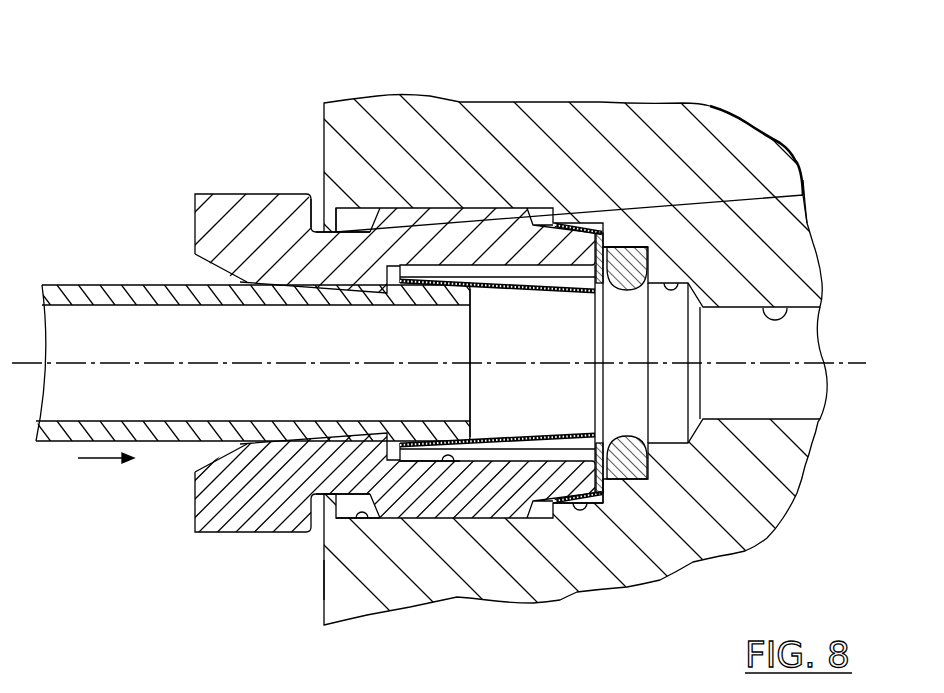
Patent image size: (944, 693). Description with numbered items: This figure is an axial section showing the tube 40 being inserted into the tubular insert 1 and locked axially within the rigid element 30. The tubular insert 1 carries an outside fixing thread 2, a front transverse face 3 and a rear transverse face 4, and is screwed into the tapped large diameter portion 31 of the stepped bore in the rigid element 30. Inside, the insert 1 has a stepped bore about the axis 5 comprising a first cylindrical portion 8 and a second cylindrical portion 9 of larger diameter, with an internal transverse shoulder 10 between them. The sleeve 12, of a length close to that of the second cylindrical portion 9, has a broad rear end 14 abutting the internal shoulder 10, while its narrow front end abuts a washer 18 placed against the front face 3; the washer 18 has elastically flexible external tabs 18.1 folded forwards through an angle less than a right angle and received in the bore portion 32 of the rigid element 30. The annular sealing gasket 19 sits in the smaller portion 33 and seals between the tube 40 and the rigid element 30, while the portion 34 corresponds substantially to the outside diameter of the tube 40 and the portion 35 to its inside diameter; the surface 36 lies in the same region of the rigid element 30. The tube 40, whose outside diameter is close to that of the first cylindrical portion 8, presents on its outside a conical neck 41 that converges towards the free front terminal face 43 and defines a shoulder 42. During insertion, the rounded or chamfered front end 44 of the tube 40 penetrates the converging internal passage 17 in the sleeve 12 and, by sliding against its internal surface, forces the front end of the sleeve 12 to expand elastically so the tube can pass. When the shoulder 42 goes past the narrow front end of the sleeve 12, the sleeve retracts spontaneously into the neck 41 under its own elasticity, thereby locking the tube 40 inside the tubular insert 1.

The tubular insert 1 is at (247, 172).
The outside fixing thread 2 is at (437, 205).
The front transverse face 3 is at (610, 487).
The rear transverse face 4 is at (198, 505).
The axis 5 is at (848, 362).
The first cylindrical portion 8 is at (278, 440).
The second cylindrical portion 9 is at (448, 462).
The internal transverse shoulder 10 is at (360, 517).
The sleeve 12 is at (549, 453).
The broad rear end 14 is at (327, 497).
The converging internal passage 17 is at (546, 342).
The washer 18 is at (615, 483).
The external tabs 18.1 is at (577, 230).
The annular sealing gasket 19 is at (642, 247).
The rigid element 30 is at (518, 128).
The large diameter portion 31 is at (325, 582).
The portion for receiving the tabs 32 is at (580, 507).
The portion for receiving the gasket 33 is at (628, 247).
The portion corresponding to tube outside diameter 34 is at (752, 127).
The portion corresponding to tube inside diameter 35 is at (803, 227).
The groove wall 36 is at (597, 505).
The tube 40 is at (100, 287).
The neck 41 is at (333, 232).
The shoulder 42 is at (343, 290).
The free front terminal face 43 is at (472, 387).
The front end 44 is at (433, 297).